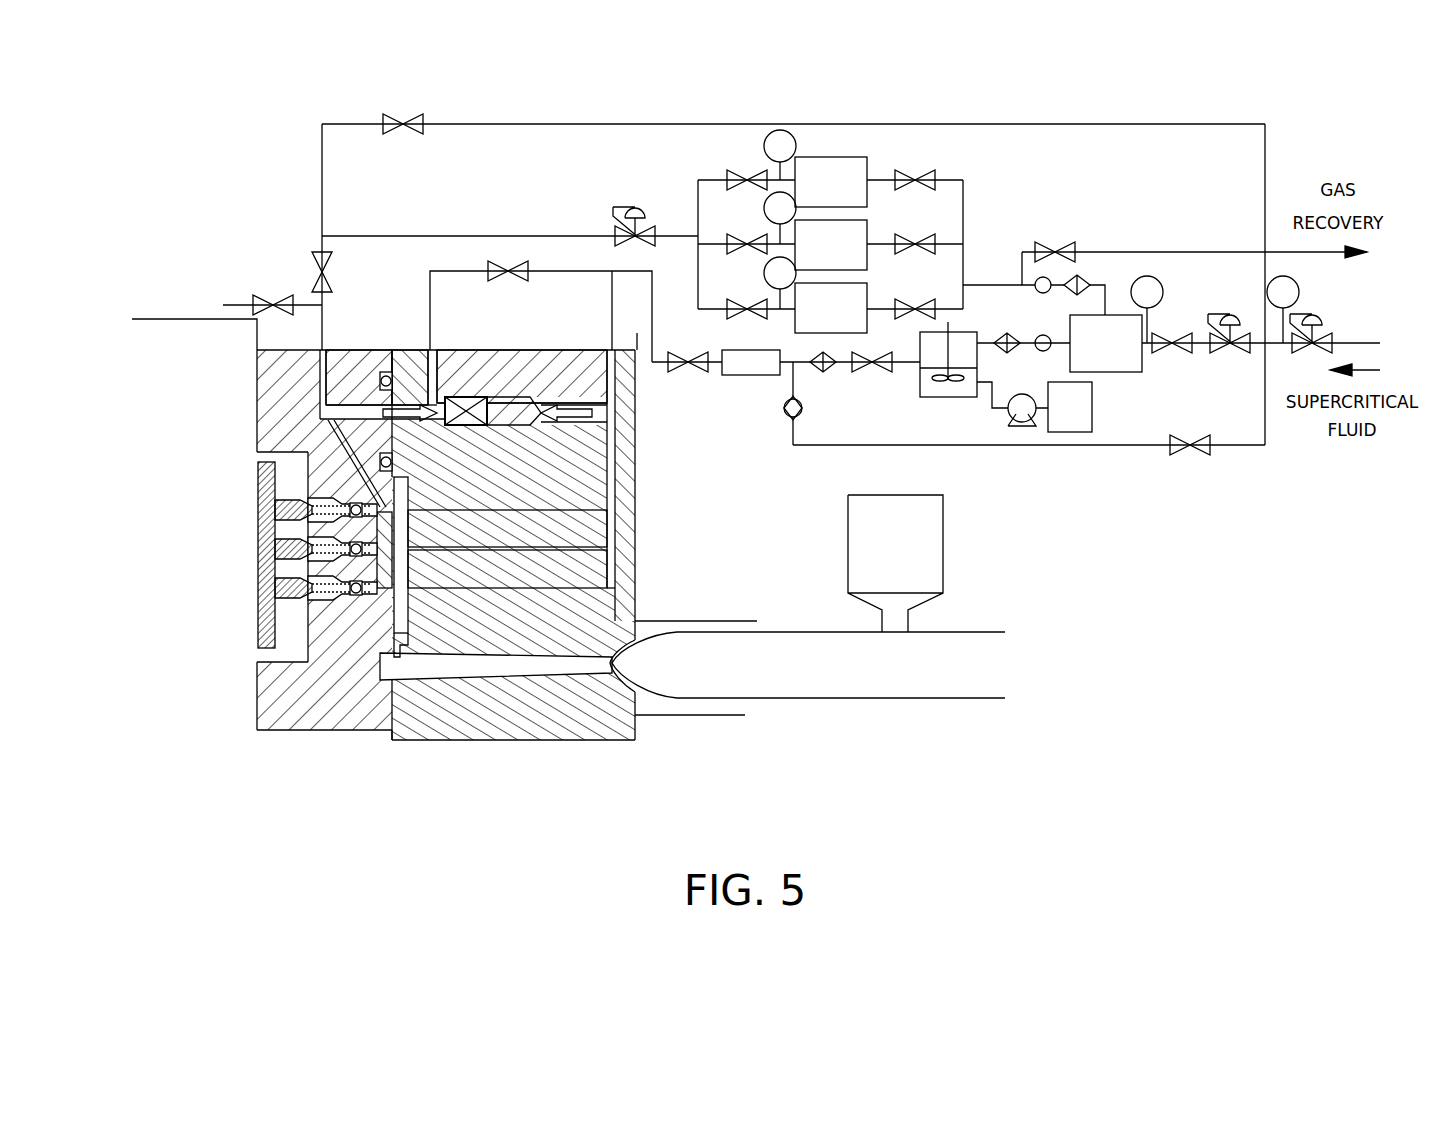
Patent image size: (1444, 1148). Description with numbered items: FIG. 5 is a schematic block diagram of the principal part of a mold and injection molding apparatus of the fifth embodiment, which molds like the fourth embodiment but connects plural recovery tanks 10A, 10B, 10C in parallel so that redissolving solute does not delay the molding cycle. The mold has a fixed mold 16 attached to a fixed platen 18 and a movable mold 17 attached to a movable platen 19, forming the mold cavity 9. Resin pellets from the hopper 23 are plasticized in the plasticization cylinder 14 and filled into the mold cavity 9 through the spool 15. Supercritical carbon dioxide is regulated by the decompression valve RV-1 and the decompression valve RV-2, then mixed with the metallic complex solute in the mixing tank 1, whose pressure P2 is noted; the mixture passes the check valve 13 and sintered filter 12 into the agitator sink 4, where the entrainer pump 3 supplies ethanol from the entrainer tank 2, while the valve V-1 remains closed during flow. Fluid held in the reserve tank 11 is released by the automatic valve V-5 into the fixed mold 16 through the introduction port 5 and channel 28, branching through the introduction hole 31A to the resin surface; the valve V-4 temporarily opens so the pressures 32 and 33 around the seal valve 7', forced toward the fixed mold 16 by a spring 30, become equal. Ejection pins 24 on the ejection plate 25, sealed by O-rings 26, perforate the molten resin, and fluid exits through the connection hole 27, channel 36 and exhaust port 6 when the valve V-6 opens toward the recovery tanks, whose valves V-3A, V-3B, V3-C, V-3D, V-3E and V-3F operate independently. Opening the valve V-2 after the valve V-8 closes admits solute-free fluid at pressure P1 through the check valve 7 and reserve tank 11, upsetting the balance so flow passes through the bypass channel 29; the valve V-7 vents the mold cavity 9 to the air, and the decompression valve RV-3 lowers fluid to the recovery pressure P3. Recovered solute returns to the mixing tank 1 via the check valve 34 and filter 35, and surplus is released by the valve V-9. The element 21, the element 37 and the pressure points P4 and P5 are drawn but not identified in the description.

The mixing tank 1 is at (1106, 343).
The entrainer tank 2 is at (1070, 407).
The entrainer pump 3 is at (1022, 410).
The agitator sink 4 is at (948, 359).
The introduction port 5 is at (612, 350).
The exhaust port 6 is at (323, 350).
The check valve 7 is at (781, 416).
The seal valve 7' is at (528, 373).
The mold cavity 9 is at (400, 582).
The recovery tank 10A is at (831, 182).
The recovery tank 10B is at (831, 245).
The recovery tank 10C is at (831, 308).
The reserve tank 11 is at (751, 362).
The sintered filter 12 is at (1006, 330).
The check valve 13 is at (1043, 329).
The plasticization cylinder 14 is at (808, 665).
The spool 15 is at (476, 668).
The fixed mold 16 is at (510, 478).
The movable mold 17 is at (258, 348).
The fixed platen 18 is at (660, 608).
The movable platen 19 is at (133, 373).
The filter 21 is at (823, 371).
The hopper 23 is at (895, 563).
The ejection pin 24 is at (275, 530).
The ejection plate 25 is at (258, 576).
The O-ring 26 is at (275, 648).
The connection hole 27 is at (319, 677).
The channel 28 is at (437, 351).
The bypass channel 29 is at (359, 428).
The spring 30 is at (462, 398).
The introduction hole 31A is at (533, 507).
The pressure 32 is at (404, 410).
The pressure 33 is at (574, 425).
The check valve 34 is at (1043, 280).
The filter 35 is at (1081, 287).
The channel 36 is at (258, 441).
The ejector pin 37 is at (342, 729).
The valve V-1 is at (1172, 354).
The valve V-2 is at (1197, 438).
The valve V-3A is at (914, 172).
The valve V-3B is at (914, 236).
The valve V3-C is at (914, 299).
The valve V-3D is at (741, 171).
The valve V-3E is at (741, 236).
The valve V-3F is at (741, 299).
The valve V-4 is at (515, 260).
The automatic valve V-5 is at (687, 372).
The valve V-6 is at (296, 272).
The valve V-7 is at (257, 295).
The valve V-8 is at (637, 254).
The valve V-9 is at (1055, 237).
The decompression valve RV-1 is at (1337, 321).
The decompression valve RV-2 is at (1232, 321).
The decompression valve RV-3 is at (632, 214).
The pressure P1 is at (1283, 309).
The pressure P2 is at (1147, 309).
The pressure P3 is at (780, 155).
The pressure gauge P4 is at (780, 218).
The pressure gauge P5 is at (780, 283).